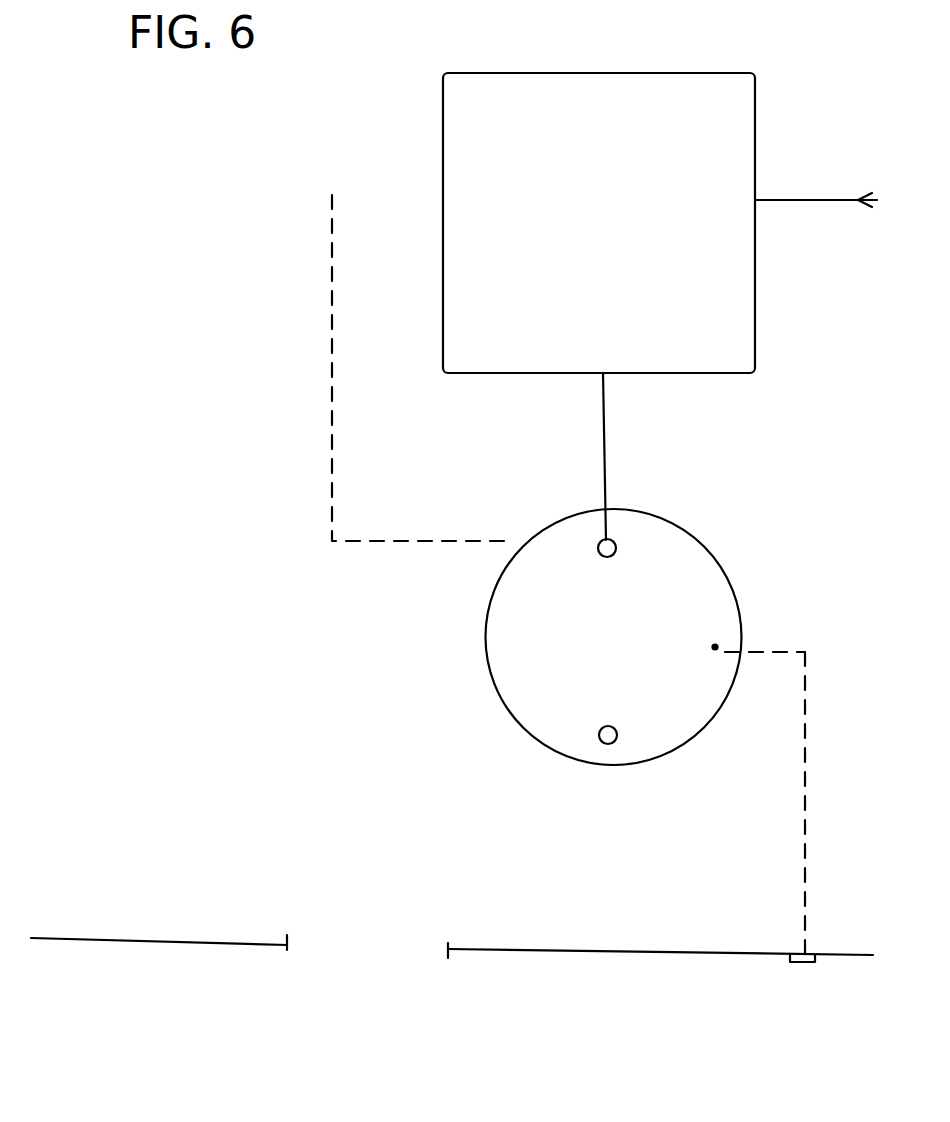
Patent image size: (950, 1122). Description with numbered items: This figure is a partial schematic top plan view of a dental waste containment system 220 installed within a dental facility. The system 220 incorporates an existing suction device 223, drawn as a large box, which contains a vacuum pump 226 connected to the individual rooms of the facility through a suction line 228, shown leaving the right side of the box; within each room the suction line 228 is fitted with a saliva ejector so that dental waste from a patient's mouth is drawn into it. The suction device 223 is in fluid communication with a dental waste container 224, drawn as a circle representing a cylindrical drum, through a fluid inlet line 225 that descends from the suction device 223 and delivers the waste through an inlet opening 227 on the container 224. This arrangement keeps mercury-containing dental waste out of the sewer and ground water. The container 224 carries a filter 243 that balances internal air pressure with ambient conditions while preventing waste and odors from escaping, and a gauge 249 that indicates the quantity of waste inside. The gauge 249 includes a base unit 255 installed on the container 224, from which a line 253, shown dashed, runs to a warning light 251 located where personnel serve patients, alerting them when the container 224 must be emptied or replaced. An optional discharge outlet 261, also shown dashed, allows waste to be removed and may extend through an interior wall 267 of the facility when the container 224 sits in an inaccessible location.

The dental waste containment system 220 is at (249, 678).
The suction device 223 is at (442, 173).
The dental waste container 224 is at (486, 655).
The fluid inlet line 225 is at (607, 440).
The vacuum pump 226 is at (487, 243).
The inlet opening 227 is at (617, 550).
The suction line 228 is at (802, 203).
The filter 243 is at (603, 743).
The gauge 249 is at (716, 648).
The warning light 251 is at (805, 963).
The line 253 is at (805, 780).
The base unit 255 is at (722, 650).
The discharge outlet 261 is at (332, 396).
The interior wall 267 is at (522, 956).